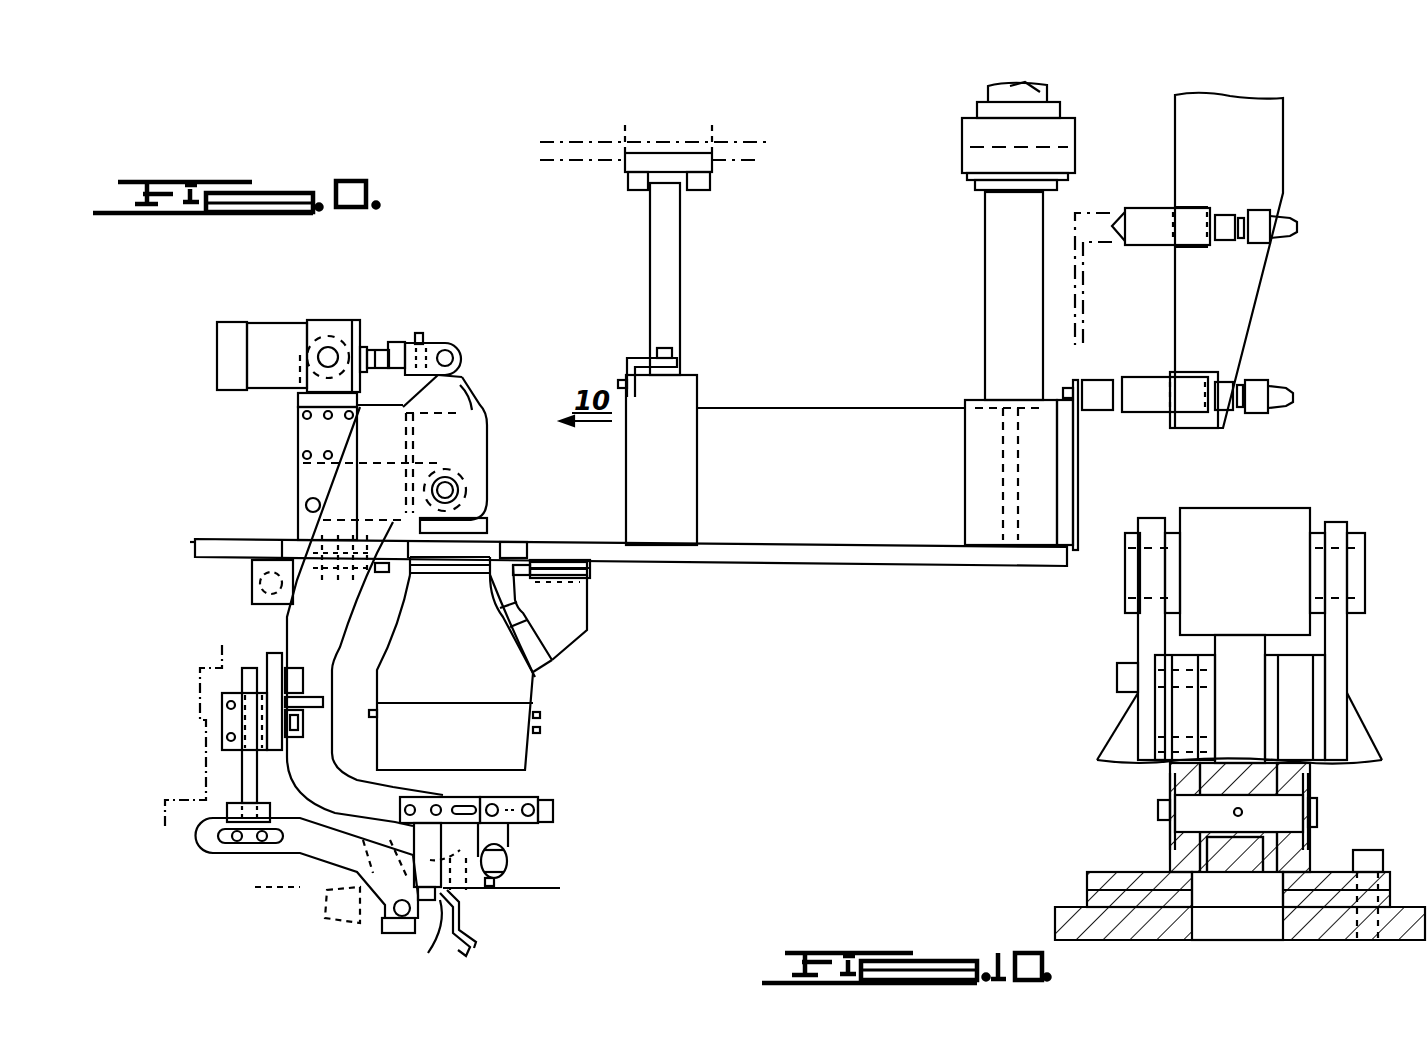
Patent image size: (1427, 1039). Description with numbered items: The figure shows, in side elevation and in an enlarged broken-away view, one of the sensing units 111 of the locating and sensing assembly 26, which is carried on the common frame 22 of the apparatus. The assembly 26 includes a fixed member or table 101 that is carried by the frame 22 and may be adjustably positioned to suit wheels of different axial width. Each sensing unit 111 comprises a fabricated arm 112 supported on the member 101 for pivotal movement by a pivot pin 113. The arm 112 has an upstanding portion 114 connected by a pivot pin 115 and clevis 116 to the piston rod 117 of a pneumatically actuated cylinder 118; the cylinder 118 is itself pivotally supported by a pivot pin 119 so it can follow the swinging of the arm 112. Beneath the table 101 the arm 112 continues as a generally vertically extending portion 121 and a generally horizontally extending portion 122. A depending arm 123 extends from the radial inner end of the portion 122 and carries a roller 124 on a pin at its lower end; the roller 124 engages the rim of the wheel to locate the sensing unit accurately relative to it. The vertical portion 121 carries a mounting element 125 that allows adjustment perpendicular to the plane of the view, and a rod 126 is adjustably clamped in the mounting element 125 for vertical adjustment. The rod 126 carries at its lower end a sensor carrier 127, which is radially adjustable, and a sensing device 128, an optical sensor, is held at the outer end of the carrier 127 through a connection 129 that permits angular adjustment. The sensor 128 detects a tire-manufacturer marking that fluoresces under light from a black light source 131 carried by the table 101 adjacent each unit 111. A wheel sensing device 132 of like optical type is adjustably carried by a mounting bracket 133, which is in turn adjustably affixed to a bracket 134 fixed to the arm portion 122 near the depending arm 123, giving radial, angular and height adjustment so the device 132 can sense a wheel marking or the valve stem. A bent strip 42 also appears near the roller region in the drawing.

In FIG. 9, the frame 22 is at (192, 549).
In FIG. 10, the frame 22 is at (1062, 905).
In FIG. 9, the locating and sensing assembly 26 is at (606, 691).
In FIG. 9, the strip 42 is at (470, 942).
In FIG. 9, the fixed member 101 is at (848, 547).
In FIG. 9, the sensing unit 111 is at (550, 764).
In FIG. 9, the fabricated arm 112 is at (320, 533).
In FIG. 10, the fabricated arm 112 is at (1210, 748).
In FIG. 9, the pivot pin 113 is at (455, 480).
In FIG. 10, the pivot pin 113 is at (1158, 812).
In FIG. 9, the upstanding portion 114 is at (463, 378).
In FIG. 10, the upstanding portion 114 is at (1313, 553).
In FIG. 9, the pivot pin 115 is at (457, 350).
In FIG. 10, the pivot pin 115 is at (1405, 532).
In FIG. 9, the clevis 116 is at (433, 346).
In FIG. 9, the piston rod 117 is at (381, 346).
In FIG. 9, the pneumatically actuated cylinder 118 is at (267, 322).
In FIG. 9, the pivot pin 119 is at (330, 347).
In FIG. 9, the vertically extending portion 121 is at (286, 627).
In FIG. 9, the horizontally extending portion 122 is at (383, 780).
In FIG. 9, the depending arm 123 is at (480, 889).
In FIG. 9, the roller 124 is at (414, 905).
In FIG. 9, the mounting element 125 is at (222, 742).
In FIG. 9, the rod 126 is at (243, 767).
In FIG. 9, the sensor carrier 127 is at (298, 848).
In FIG. 9, the sensing device 128 is at (382, 930).
In FIG. 9, the connection 129 is at (397, 907).
In FIG. 9, the black light source 131 is at (540, 668).
In FIG. 9, the wheel sensing device 132 is at (503, 857).
In FIG. 9, the mounting bracket 133 is at (520, 797).
In FIG. 9, the bracket 134 is at (457, 793).